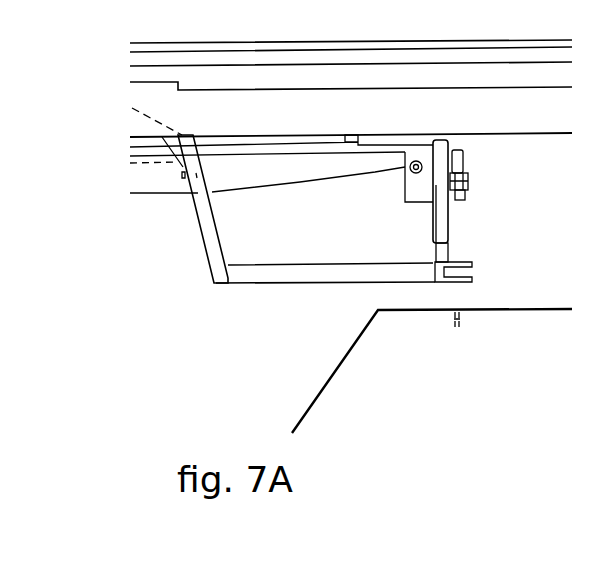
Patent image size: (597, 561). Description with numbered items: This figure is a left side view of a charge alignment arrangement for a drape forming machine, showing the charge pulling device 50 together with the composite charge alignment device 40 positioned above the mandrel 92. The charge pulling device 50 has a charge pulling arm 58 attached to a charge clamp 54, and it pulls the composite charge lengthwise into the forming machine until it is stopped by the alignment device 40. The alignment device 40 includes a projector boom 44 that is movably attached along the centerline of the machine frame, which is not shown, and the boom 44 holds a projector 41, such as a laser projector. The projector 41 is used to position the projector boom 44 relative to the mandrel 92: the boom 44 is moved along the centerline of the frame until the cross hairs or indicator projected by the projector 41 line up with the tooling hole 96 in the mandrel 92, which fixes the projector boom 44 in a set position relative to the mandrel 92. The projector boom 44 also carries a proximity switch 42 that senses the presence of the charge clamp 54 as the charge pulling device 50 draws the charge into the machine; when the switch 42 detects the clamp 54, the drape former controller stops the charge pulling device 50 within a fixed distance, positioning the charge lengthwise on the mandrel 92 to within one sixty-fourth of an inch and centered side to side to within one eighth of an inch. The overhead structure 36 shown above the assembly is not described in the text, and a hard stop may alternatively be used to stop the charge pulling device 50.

The side wall structure 36 is at (128, 60).
The composite charge alignment device 40 is at (493, 192).
The projector 41 is at (463, 160).
The proximity switch 42 is at (392, 168).
The projector boom 44 is at (300, 185).
The charge pulling device 50 is at (240, 307).
The charge clamp 54 is at (462, 260).
The charge pulling arm 58 is at (202, 243).
The mandrel 92 is at (330, 375).
The tooling hole 96 is at (457, 329).